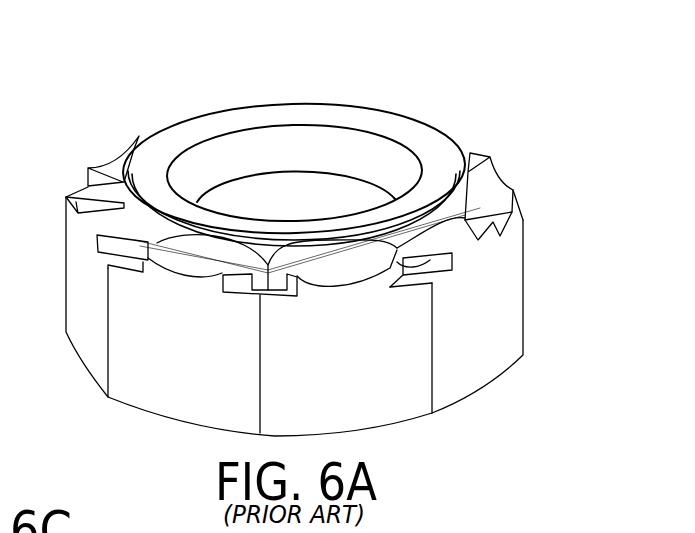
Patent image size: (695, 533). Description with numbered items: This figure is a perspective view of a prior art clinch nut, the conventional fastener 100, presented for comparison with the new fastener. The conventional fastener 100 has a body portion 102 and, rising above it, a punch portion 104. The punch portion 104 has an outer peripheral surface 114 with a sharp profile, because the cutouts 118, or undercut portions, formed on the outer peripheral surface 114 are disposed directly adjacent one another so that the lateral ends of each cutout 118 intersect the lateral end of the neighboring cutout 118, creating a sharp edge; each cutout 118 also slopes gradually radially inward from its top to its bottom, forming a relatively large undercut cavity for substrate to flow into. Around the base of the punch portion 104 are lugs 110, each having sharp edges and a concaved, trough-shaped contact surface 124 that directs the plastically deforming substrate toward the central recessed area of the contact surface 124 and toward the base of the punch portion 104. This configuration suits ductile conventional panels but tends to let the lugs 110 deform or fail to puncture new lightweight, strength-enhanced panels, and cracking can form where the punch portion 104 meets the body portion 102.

The conventional fastener 100 is at (320, 226).
The body portion 102 is at (536, 290).
The punch portion 104 is at (323, 101).
The lugs 110 is at (253, 288).
The outer peripheral surface 114 is at (134, 222).
The cutouts 118 is at (355, 268).
The contact surface 124 is at (146, 262).